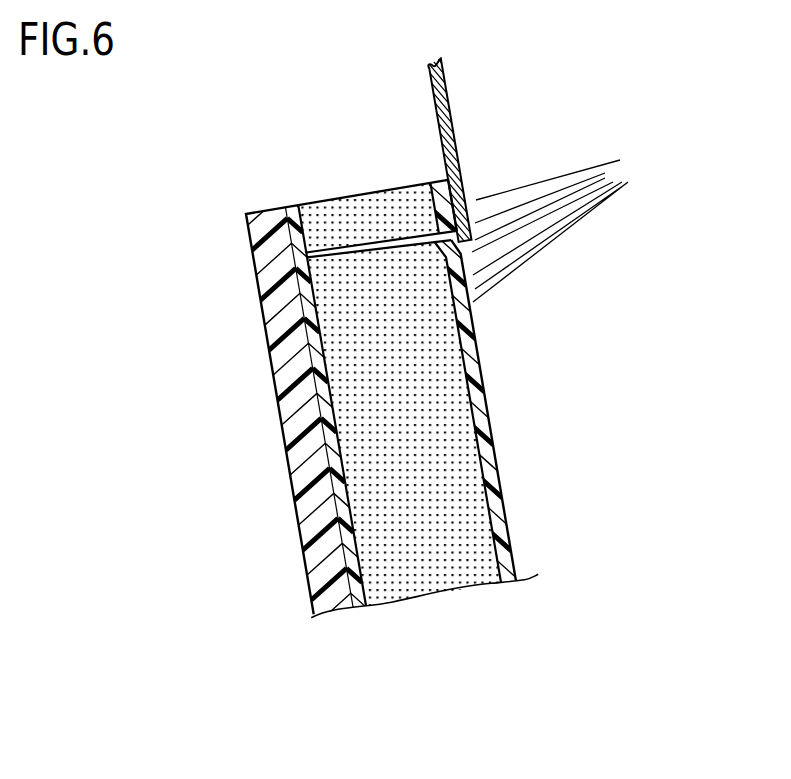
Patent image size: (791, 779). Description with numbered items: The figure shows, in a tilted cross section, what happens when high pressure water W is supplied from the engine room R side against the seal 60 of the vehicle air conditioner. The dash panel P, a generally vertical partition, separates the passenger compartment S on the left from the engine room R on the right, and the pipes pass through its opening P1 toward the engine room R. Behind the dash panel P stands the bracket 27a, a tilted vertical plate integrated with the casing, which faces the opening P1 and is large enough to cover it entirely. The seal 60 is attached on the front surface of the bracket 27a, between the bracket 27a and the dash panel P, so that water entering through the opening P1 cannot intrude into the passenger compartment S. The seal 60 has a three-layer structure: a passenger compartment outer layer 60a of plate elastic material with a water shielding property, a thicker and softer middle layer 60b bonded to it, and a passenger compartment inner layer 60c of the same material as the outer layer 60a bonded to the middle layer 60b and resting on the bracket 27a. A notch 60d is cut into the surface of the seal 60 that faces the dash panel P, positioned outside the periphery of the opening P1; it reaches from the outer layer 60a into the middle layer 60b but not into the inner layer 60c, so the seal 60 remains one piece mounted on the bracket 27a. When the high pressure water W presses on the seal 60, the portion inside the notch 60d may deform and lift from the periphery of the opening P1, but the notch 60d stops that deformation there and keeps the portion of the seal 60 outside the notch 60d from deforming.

The bracket 27a is at (258, 213).
The seal 60 is at (507, 443).
The passenger compartment outer layer 60a is at (437, 180).
The middle layer 60b is at (356, 194).
The passenger compartment inner layer 60c is at (291, 206).
The notch 60d is at (398, 237).
The dash panel P is at (459, 108).
The opening P1 is at (490, 248).
The high pressure water W is at (603, 200).
The passenger compartment S is at (183, 369).
The engine room R is at (654, 369).